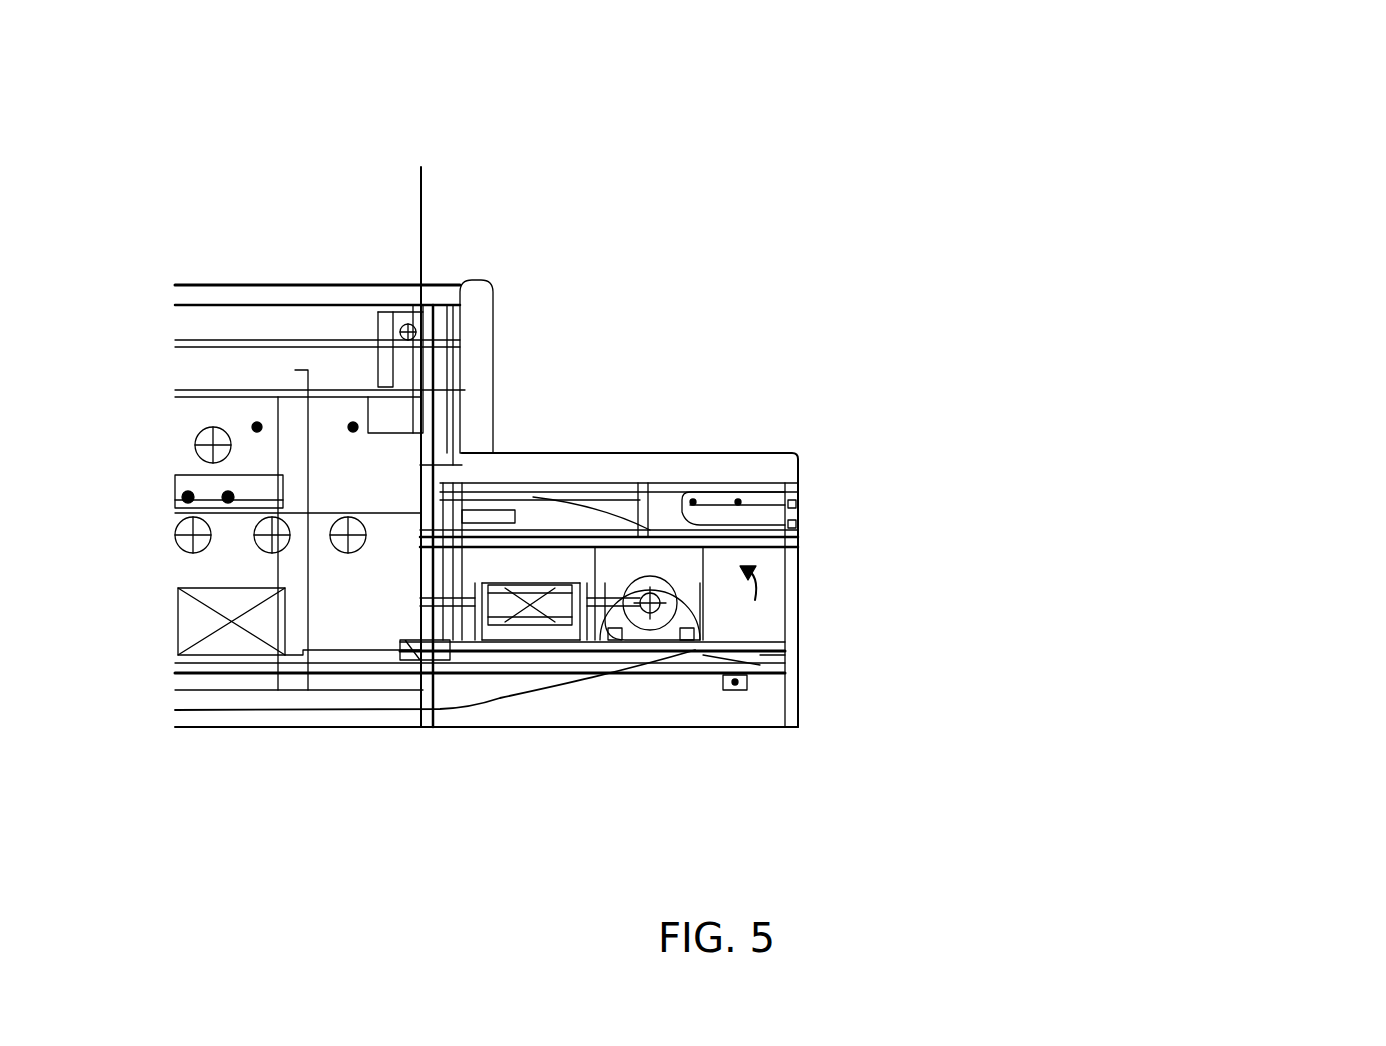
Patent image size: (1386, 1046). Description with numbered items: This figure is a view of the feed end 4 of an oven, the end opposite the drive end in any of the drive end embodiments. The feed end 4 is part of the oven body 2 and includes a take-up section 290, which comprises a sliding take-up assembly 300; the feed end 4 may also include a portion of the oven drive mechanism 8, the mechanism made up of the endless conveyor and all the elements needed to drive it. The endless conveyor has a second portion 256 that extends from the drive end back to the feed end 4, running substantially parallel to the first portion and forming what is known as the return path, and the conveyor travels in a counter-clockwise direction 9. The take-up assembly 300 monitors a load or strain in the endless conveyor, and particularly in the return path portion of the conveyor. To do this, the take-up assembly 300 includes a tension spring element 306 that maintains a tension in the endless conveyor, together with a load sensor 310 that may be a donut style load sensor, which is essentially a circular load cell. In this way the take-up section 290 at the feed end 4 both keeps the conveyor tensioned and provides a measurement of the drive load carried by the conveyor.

The oven body 2 is at (245, 202).
The oven drive mechanism 8 is at (530, 425).
The feed end 4 is at (877, 510).
The counter-clockwise direction 9 is at (818, 600).
The take-up section 290 is at (808, 570).
The spring element 306 is at (548, 588).
The load sensor 310 is at (590, 638).
The take-up assembly 300 is at (760, 665).
The second portion 256 is at (465, 718).